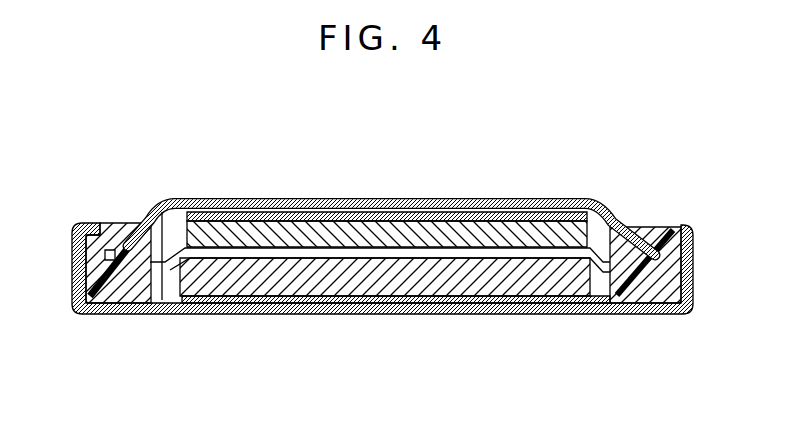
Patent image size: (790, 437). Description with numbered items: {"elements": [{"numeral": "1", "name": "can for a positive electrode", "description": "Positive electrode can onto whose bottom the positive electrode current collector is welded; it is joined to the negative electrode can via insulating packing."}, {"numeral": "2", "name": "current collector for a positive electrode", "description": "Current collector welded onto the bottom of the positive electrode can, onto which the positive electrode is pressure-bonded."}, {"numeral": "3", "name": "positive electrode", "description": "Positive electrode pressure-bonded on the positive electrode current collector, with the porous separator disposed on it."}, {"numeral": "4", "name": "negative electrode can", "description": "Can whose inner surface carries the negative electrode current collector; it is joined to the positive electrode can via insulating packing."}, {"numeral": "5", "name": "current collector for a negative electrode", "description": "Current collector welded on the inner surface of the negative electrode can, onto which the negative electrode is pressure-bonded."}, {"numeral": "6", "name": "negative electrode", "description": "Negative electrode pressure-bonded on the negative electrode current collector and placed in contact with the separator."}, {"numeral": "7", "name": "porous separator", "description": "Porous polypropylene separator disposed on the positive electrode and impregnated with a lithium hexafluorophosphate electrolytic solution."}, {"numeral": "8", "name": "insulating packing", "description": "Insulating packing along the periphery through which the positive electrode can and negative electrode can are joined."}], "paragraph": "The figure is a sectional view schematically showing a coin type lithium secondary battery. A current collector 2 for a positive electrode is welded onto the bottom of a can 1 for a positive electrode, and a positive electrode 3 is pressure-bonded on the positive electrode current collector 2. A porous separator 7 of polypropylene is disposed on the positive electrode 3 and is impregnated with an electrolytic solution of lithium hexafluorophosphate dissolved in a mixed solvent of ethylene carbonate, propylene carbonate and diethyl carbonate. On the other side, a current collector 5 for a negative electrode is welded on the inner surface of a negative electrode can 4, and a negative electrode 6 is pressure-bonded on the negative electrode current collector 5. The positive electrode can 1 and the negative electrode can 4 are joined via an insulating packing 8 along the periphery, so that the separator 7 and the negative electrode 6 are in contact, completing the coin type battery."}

The negative electrode case (can) 1 is at (277, 315).
The negative electrode current collector layer 2 is at (345, 315).
The negative electrode 3 is at (443, 283).
The positive electrode case 4 is at (278, 200).
The positive electrode current collector layer 5 is at (380, 200).
The positive electrode 6 is at (446, 200).
The separator 7 is at (523, 253).
The gasket 8 is at (650, 225).